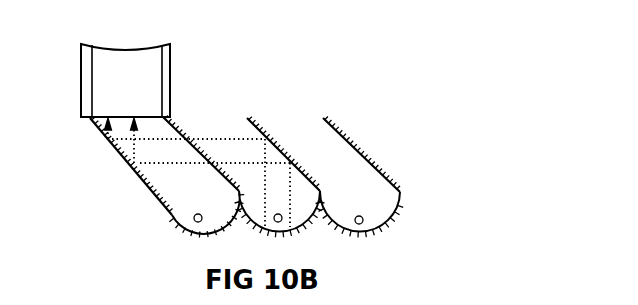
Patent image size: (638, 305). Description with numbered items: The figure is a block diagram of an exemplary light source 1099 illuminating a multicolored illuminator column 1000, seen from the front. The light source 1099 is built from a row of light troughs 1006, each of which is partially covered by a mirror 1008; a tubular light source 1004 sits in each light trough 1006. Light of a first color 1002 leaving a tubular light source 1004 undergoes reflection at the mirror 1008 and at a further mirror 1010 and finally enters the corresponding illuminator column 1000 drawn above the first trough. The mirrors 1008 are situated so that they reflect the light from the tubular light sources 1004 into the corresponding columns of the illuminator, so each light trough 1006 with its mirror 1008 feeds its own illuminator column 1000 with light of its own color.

The multicolored illuminator column 1000 is at (113, 50).
The light source 1099 is at (427, 72).
The light of a first color 1002 is at (225, 139).
The tubular light source 1004 is at (363, 219).
The light trough 1006 is at (294, 225).
The mirror 1008 is at (366, 157).
The mirror 1010 is at (143, 178).